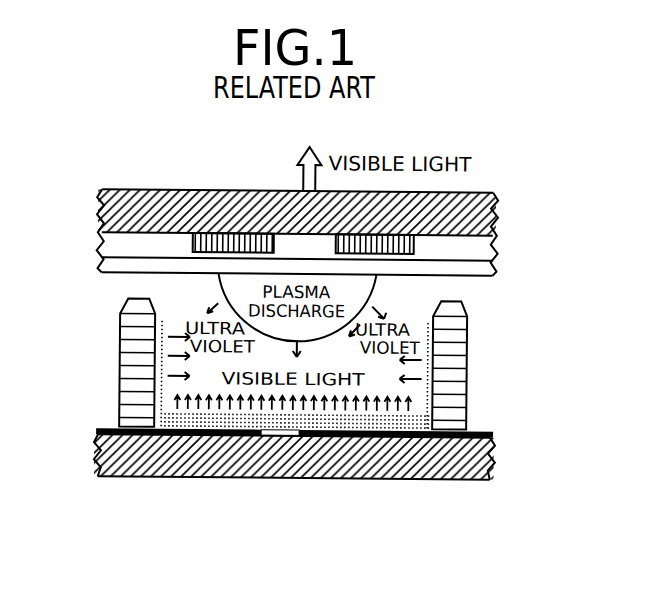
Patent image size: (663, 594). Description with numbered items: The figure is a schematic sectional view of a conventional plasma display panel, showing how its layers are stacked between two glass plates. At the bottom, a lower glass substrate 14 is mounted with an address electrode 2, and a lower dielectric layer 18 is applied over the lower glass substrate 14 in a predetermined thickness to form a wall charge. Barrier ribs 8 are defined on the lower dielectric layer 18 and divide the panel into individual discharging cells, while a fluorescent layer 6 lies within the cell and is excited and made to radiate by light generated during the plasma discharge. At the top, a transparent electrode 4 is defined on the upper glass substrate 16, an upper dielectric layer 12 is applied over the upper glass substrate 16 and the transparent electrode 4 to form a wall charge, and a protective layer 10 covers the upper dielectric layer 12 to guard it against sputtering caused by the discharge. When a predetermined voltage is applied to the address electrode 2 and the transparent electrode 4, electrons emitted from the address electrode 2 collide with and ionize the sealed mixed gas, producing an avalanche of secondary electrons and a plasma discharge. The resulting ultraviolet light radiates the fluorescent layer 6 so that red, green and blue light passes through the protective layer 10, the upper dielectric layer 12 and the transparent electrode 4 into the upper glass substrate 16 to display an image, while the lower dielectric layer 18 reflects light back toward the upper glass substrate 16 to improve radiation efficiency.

The address electrode 2 is at (294, 438).
The transparent electrode 4 is at (192, 245).
The fluorescent layer 6 is at (395, 422).
The barrier ribs 8 is at (462, 367).
The protective layer 10 is at (492, 268).
The upper dielectric layer 12 is at (493, 247).
The lower glass substrate 14 is at (385, 458).
The upper glass substrate 16 is at (494, 212).
The lower dielectric layer 18 is at (495, 437).